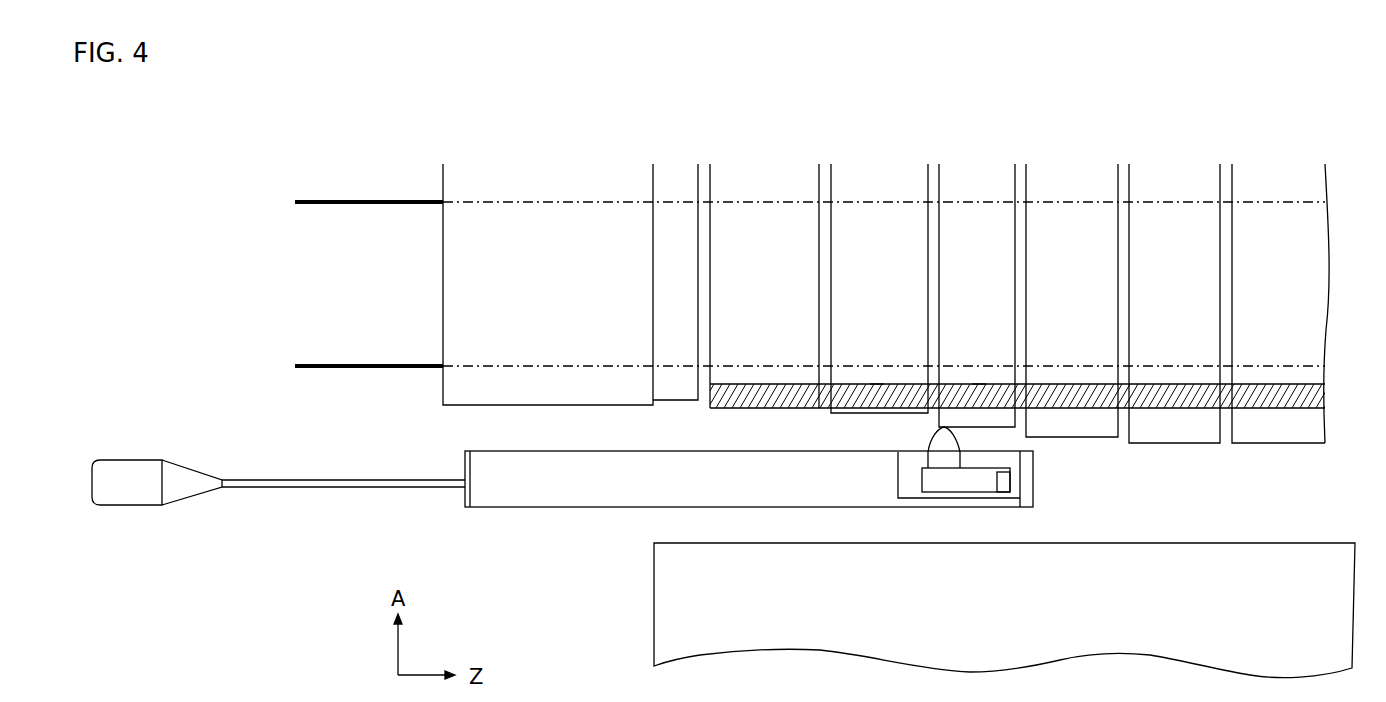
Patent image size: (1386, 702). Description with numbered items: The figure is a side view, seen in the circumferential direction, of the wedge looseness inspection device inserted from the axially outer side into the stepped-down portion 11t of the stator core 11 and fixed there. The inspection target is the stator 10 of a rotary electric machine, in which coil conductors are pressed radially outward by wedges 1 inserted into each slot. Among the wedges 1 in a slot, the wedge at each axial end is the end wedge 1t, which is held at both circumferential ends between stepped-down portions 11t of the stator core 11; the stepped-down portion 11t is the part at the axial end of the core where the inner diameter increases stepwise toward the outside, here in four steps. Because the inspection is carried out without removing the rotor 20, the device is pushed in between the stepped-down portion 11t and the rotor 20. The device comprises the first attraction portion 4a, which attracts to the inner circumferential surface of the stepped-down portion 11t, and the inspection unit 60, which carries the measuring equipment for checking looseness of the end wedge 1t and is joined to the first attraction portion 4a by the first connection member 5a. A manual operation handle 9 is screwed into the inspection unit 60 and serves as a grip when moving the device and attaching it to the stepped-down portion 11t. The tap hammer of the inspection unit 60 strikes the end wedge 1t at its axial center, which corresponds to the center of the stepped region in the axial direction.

The wedge 1 is at (1168, 384).
The end wedge 1t is at (979, 384).
The first attraction portion 4a is at (925, 465).
The first connection member 5a is at (938, 500).
The manual operation handle 9 is at (302, 490).
The stator 10 is at (305, 150).
The stator core 11 is at (714, 250).
The stepped-down portion 11t is at (877, 384).
The rotor 20 is at (665, 588).
The inspection unit 60 is at (1035, 497).